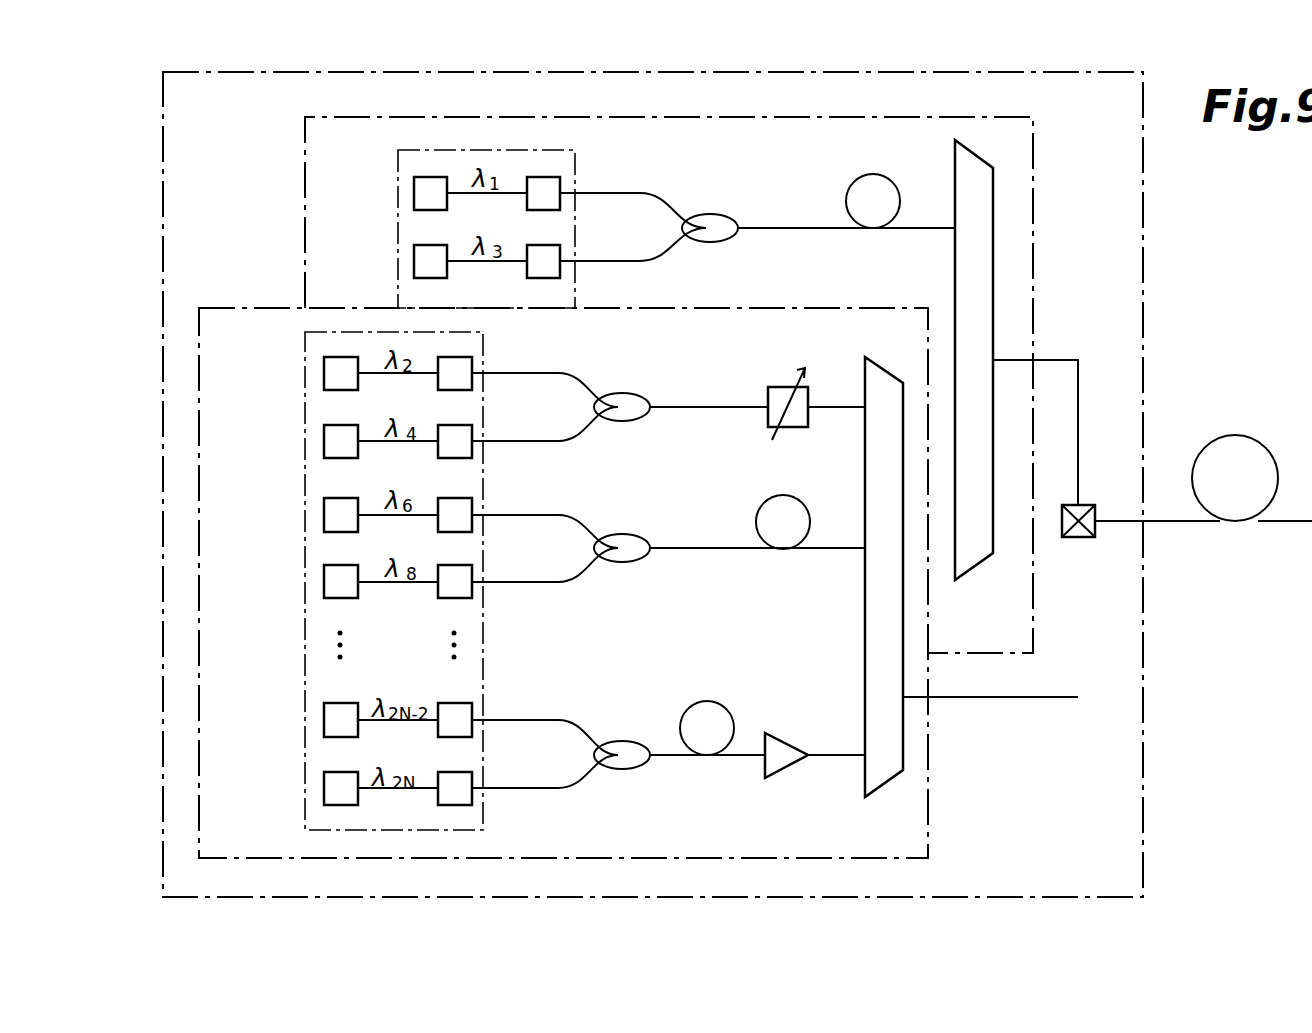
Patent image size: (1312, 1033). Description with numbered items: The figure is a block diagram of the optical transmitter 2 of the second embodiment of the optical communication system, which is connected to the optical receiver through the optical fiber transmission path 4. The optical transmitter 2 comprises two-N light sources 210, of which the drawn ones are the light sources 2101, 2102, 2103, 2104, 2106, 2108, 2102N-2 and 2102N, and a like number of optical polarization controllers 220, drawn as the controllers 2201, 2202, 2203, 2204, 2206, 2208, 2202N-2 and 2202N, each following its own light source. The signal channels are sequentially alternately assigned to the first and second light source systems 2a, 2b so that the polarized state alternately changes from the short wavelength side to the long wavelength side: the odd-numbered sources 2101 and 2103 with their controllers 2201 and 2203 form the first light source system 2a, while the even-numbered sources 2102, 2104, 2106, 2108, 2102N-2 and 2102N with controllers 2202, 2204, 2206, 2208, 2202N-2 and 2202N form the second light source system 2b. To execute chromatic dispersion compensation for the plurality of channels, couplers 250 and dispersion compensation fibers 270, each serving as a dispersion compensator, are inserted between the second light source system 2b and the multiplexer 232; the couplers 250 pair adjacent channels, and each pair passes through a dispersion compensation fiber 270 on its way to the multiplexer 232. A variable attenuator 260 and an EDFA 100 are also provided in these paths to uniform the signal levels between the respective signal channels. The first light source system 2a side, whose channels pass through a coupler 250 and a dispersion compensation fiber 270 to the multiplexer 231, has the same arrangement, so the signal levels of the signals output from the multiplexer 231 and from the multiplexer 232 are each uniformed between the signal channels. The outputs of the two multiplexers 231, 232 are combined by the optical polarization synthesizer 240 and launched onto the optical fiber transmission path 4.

The optical transmitter 2 is at (1143, 201).
The first light source system 2a is at (432, 149).
The second light source system 2b is at (305, 343).
The optical fiber transmission path 4 is at (1235, 435).
The EDFA 100 is at (793, 741).
The light sources 210 is at (327, 491).
The light source 2101 is at (414, 193).
The light source 2102 is at (324, 373).
The light source 2103 is at (414, 261).
The light source 2104 is at (324, 441).
The light source 2106 is at (324, 515).
The light source 2108 is at (324, 582).
The light source 2102N-2 is at (324, 720).
The light source 2102N is at (324, 788).
The optical polarization controllers 220 is at (543, 479).
The optical polarization controller 2201 is at (563, 187).
The optical polarization controller 2202 is at (474, 367).
The optical polarization controller 2203 is at (563, 255).
The optical polarization controller 2204 is at (474, 436).
The optical polarization controller 2206 is at (474, 509).
The optical polarization controller 2208 is at (474, 576).
The optical polarization controller 2202N-2 is at (474, 716).
The optical polarization controller 2202N is at (474, 784).
The multiplexer 231 is at (976, 570).
The multiplexer 232 is at (886, 785).
The optical polarization synthesizer 240 is at (1088, 539).
The coupler 250 is at (731, 241).
The variable attenuator 260 is at (776, 385).
The dispersion compensation fiber 270 is at (890, 180).